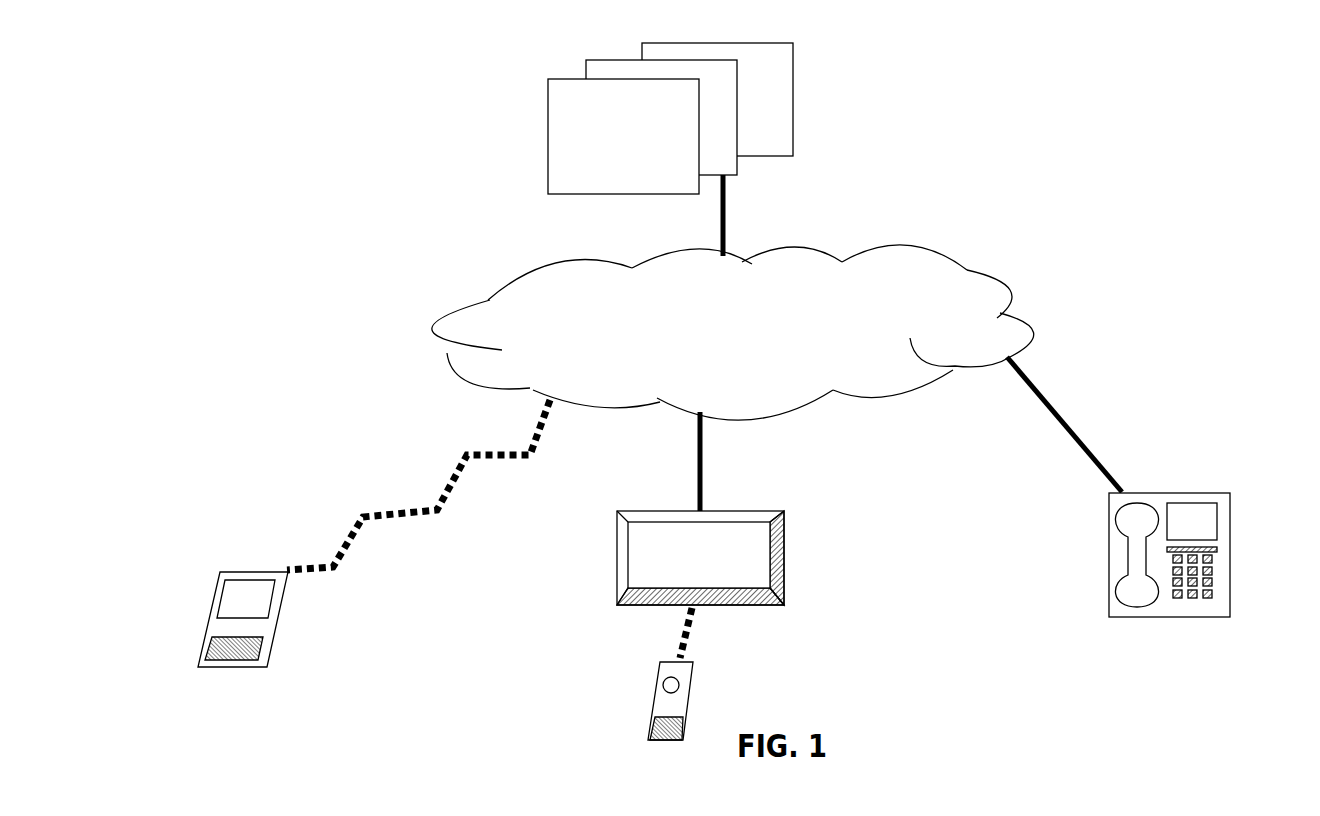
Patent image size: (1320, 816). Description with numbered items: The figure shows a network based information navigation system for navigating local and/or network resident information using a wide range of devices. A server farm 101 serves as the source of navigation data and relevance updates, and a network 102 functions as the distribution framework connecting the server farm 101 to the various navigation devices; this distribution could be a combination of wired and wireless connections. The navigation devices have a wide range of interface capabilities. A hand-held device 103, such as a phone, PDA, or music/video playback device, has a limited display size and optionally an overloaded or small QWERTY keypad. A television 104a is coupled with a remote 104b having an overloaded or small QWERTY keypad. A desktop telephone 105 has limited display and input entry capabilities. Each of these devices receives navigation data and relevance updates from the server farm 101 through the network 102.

The server farm 101 is at (640, 140).
The network 102 is at (786, 337).
The hand-held device 103 is at (266, 550).
The television 104a is at (563, 578).
The remote 104b is at (595, 726).
The desktop telephone 105 is at (1203, 686).